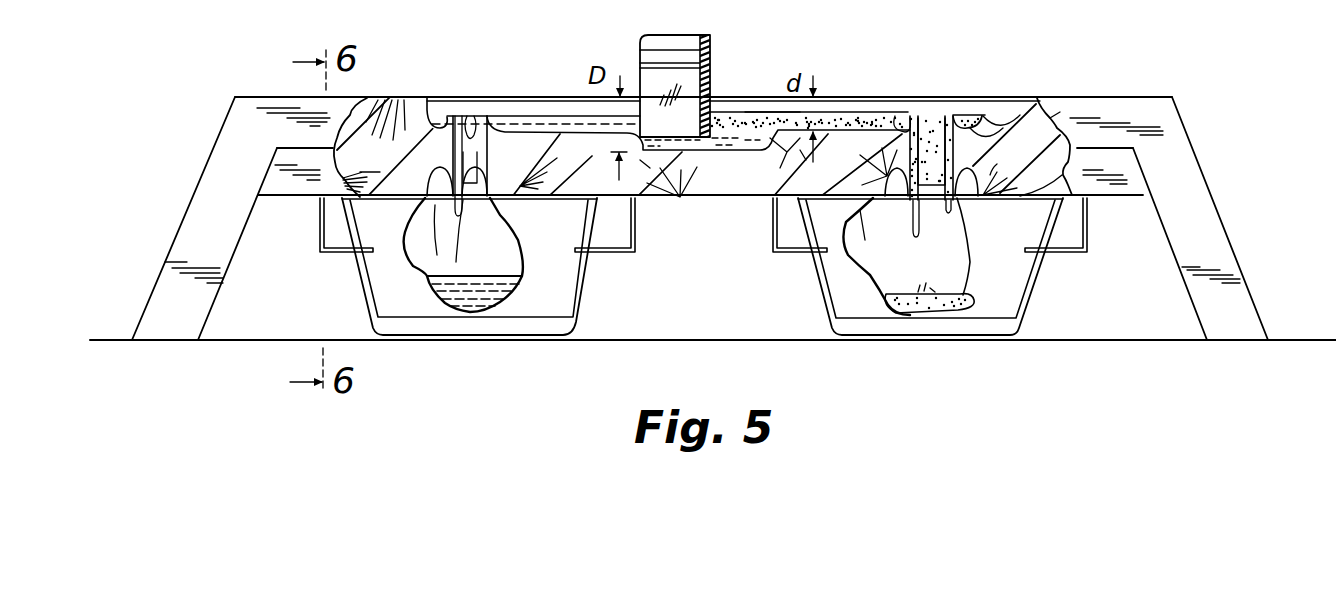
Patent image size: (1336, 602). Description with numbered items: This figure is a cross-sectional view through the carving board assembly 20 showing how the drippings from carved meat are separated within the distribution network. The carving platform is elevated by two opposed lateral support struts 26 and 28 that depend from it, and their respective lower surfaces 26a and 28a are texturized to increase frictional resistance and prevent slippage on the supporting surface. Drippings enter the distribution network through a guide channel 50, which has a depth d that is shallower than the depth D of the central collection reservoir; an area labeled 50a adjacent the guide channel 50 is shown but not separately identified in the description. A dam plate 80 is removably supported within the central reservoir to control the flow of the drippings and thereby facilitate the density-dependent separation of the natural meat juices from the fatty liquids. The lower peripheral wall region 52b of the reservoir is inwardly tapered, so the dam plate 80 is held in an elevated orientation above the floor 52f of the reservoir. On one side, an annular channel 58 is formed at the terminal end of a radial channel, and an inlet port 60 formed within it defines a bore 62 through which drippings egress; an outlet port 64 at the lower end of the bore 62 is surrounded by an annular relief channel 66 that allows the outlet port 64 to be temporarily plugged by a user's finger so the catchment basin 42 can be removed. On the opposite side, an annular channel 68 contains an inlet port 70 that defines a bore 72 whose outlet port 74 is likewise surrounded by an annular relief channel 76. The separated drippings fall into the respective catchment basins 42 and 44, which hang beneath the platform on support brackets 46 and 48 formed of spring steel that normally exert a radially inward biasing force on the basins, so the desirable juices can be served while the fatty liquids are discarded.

The carving board assembly 20 is at (1192, 84).
The lateral support strut 26 is at (192, 200).
The lower surface 26a is at (168, 340).
The lateral support strut 28 is at (1195, 188).
The lower surface 28a is at (1244, 340).
The catchment basin 42 is at (543, 303).
The catchment basin 44 is at (1047, 287).
The support bracket 46 is at (618, 256).
The support bracket 48 is at (1095, 240).
The guide channel 50 is at (717, 100).
The stencil plate portion 50a is at (752, 110).
The lower peripheral wall region 52b is at (765, 152).
The floor 52f is at (710, 136).
The annular channel 58 is at (433, 100).
The inlet port 60 is at (485, 115).
The bore 62 is at (503, 115).
The outlet port 64 is at (442, 283).
The annular relief channel 66 is at (492, 200).
The annular channel 68 is at (912, 123).
The inlet port 70 is at (950, 143).
The bore 72 is at (983, 122).
The outlet port 74 is at (928, 200).
The annular relief channel 76 is at (987, 200).
The dam plate 80 is at (664, 36).